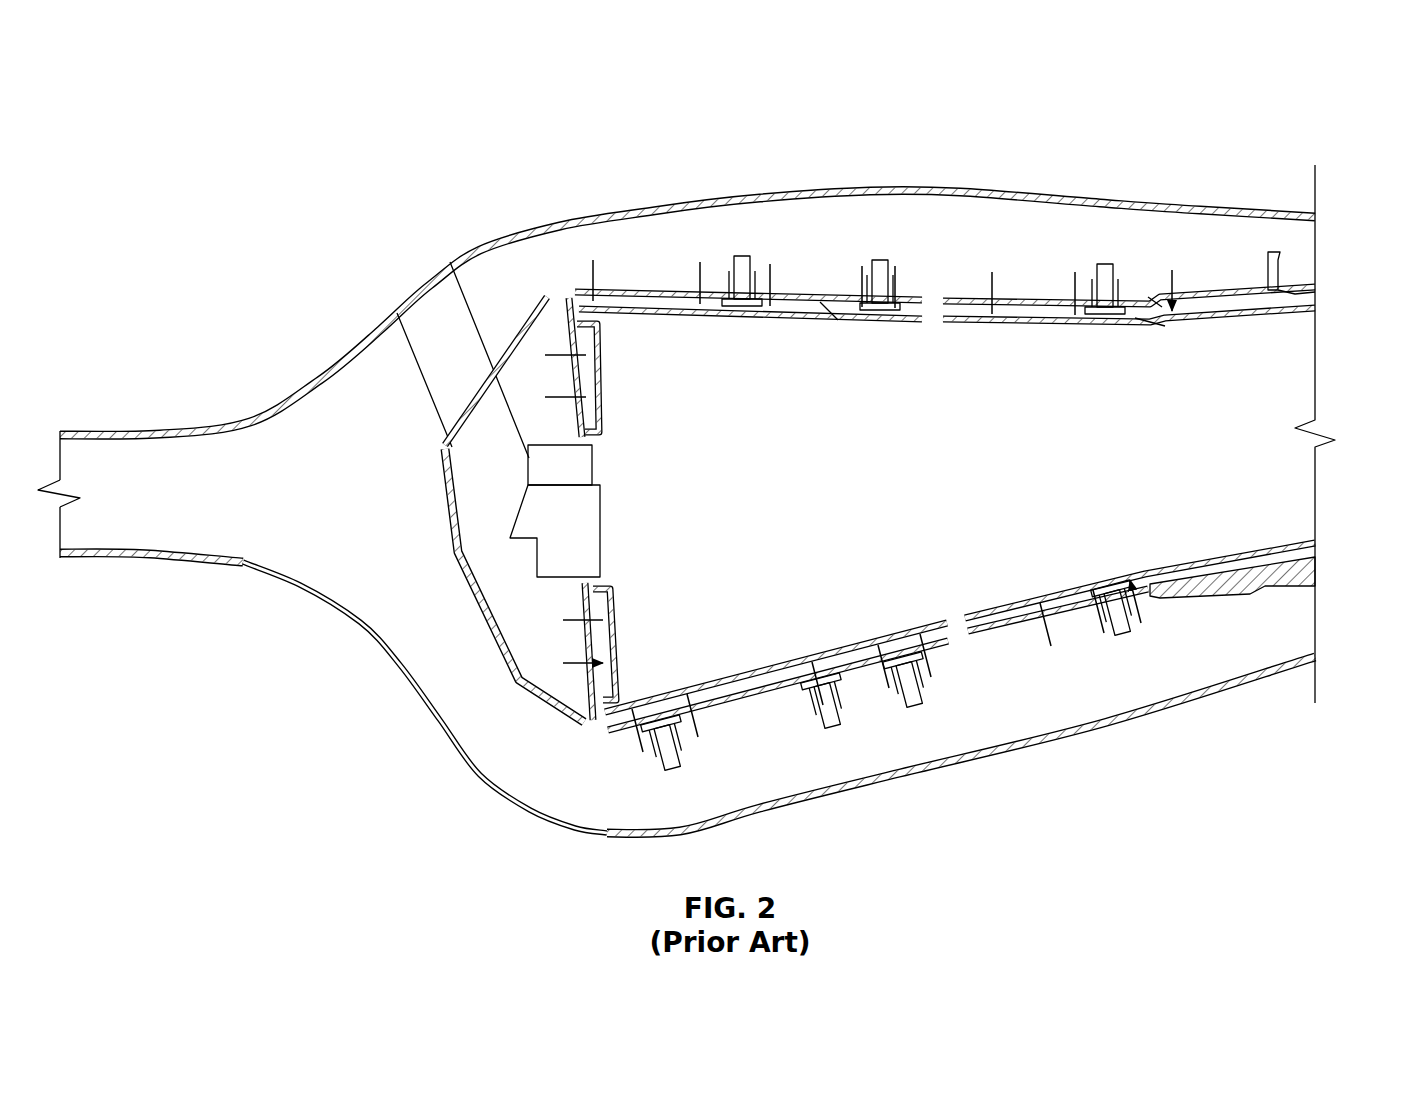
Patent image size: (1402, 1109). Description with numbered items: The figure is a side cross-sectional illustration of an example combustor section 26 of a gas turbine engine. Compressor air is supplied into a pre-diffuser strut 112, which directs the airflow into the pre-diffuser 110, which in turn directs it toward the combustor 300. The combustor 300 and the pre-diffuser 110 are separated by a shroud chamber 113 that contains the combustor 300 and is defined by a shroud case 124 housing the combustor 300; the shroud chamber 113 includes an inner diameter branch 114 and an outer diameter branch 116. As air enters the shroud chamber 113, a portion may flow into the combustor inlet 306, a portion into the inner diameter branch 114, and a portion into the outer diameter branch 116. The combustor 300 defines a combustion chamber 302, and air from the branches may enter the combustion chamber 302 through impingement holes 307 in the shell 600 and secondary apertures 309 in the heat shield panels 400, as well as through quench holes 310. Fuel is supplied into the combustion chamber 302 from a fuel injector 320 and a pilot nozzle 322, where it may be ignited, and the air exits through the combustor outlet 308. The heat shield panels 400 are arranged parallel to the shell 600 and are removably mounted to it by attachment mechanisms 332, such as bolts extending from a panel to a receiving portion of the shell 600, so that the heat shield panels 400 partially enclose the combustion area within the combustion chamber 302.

The combustor section 26 is at (418, 124).
The pre-diffuser 110 is at (123, 454).
The pre-diffuser strut 112 is at (58, 534).
The shroud chamber 113 is at (530, 762).
The inner diameter branch 114 is at (1130, 687).
The outer diameter branch 116 is at (722, 243).
The shroud case 124 is at (905, 191).
The combustor 300 is at (956, 261).
The combustion chamber 302 is at (895, 505).
The inlet 306 is at (631, 477).
The impingement holes 307 is at (1136, 300).
The outlet 308 is at (1291, 472).
The secondary apertures 309 is at (1131, 330).
The quench holes 310 is at (932, 322).
The fuel injector 320 is at (469, 282).
The pilot nozzle 322 is at (607, 510).
The attachment mechanism 332 is at (905, 688).
The heat shield panels 400 is at (670, 314).
The shell 600 is at (788, 293).